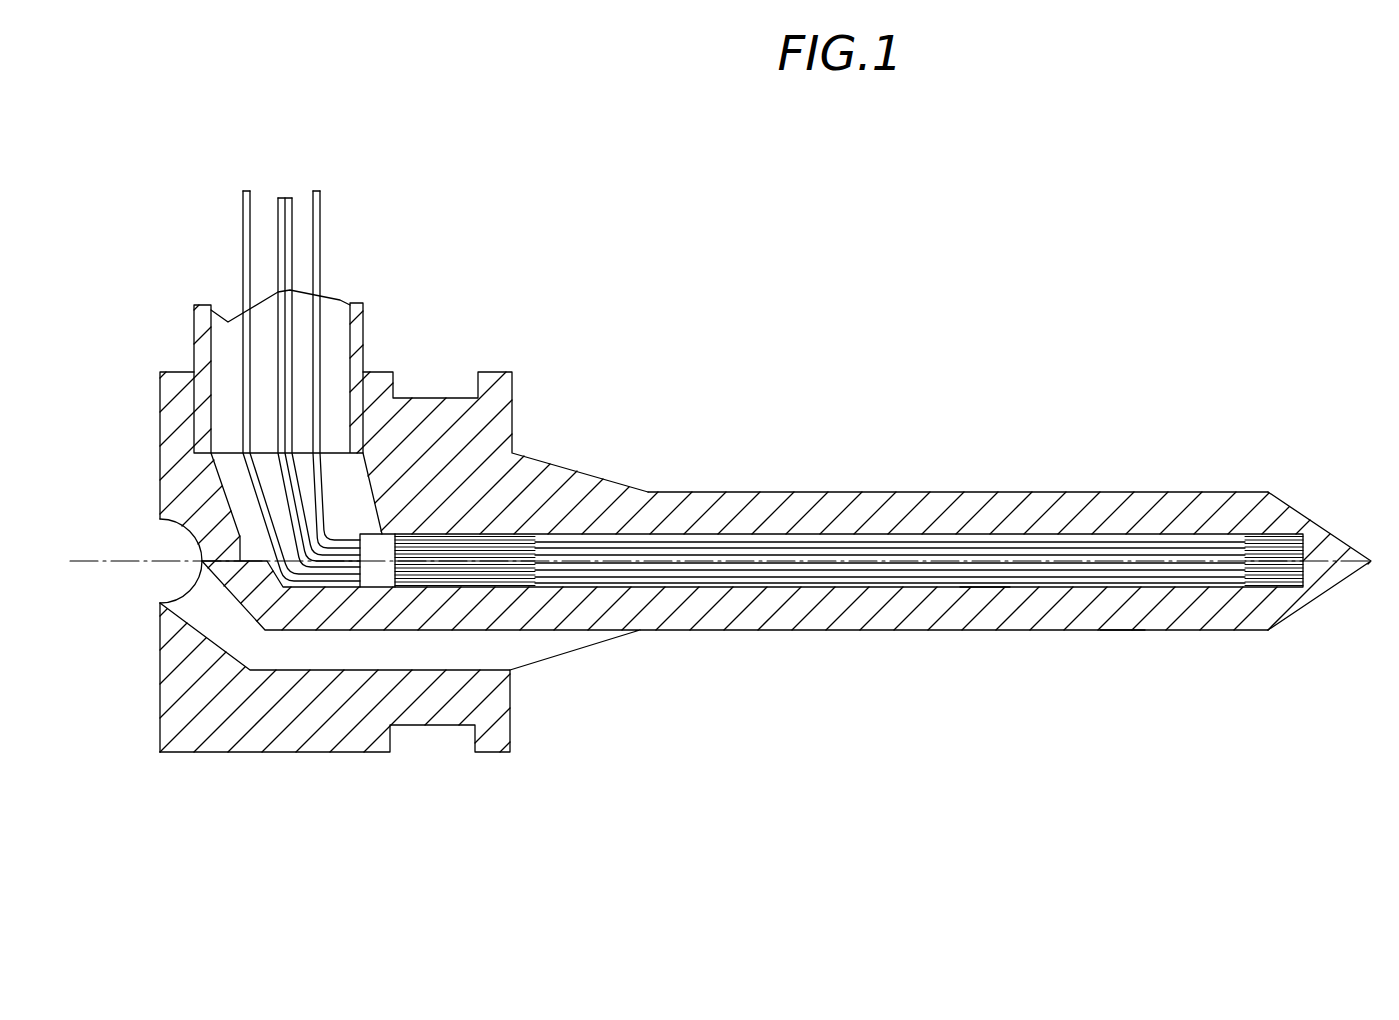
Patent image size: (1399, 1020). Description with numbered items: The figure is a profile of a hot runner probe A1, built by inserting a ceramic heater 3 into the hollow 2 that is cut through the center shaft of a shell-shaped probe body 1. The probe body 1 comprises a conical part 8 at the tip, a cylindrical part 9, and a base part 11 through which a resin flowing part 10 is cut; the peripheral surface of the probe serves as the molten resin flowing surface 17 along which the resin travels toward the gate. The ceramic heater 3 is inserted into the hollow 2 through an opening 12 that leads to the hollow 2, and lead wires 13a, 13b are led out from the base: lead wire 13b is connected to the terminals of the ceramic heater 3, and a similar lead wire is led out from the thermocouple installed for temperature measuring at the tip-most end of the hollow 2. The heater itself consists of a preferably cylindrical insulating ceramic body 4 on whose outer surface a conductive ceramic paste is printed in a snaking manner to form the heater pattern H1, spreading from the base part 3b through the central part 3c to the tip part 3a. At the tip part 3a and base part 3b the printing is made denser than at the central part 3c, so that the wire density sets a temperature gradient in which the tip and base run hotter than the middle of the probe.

The shell-shaped probe body 1 is at (1058, 493).
The hollow 2 is at (874, 586).
The ceramic heater 3 is at (1122, 543).
The tip part 3a is at (1285, 540).
The base part 3b is at (518, 582).
The central part 3c is at (740, 580).
The insulating ceramic body 4 is at (817, 540).
The conical part 8 is at (1318, 590).
The cylindrical part 9 is at (937, 493).
The resin flowing part 10 is at (308, 660).
The base part 11 is at (213, 727).
The opening 12 is at (233, 493).
The lead wires 13a is at (247, 233).
The lead wire 13b is at (293, 225).
The molten resin flowing surface 17 is at (687, 492).
The heater pattern H1 is at (983, 580).
The hot runner probe A1 is at (1122, 634).